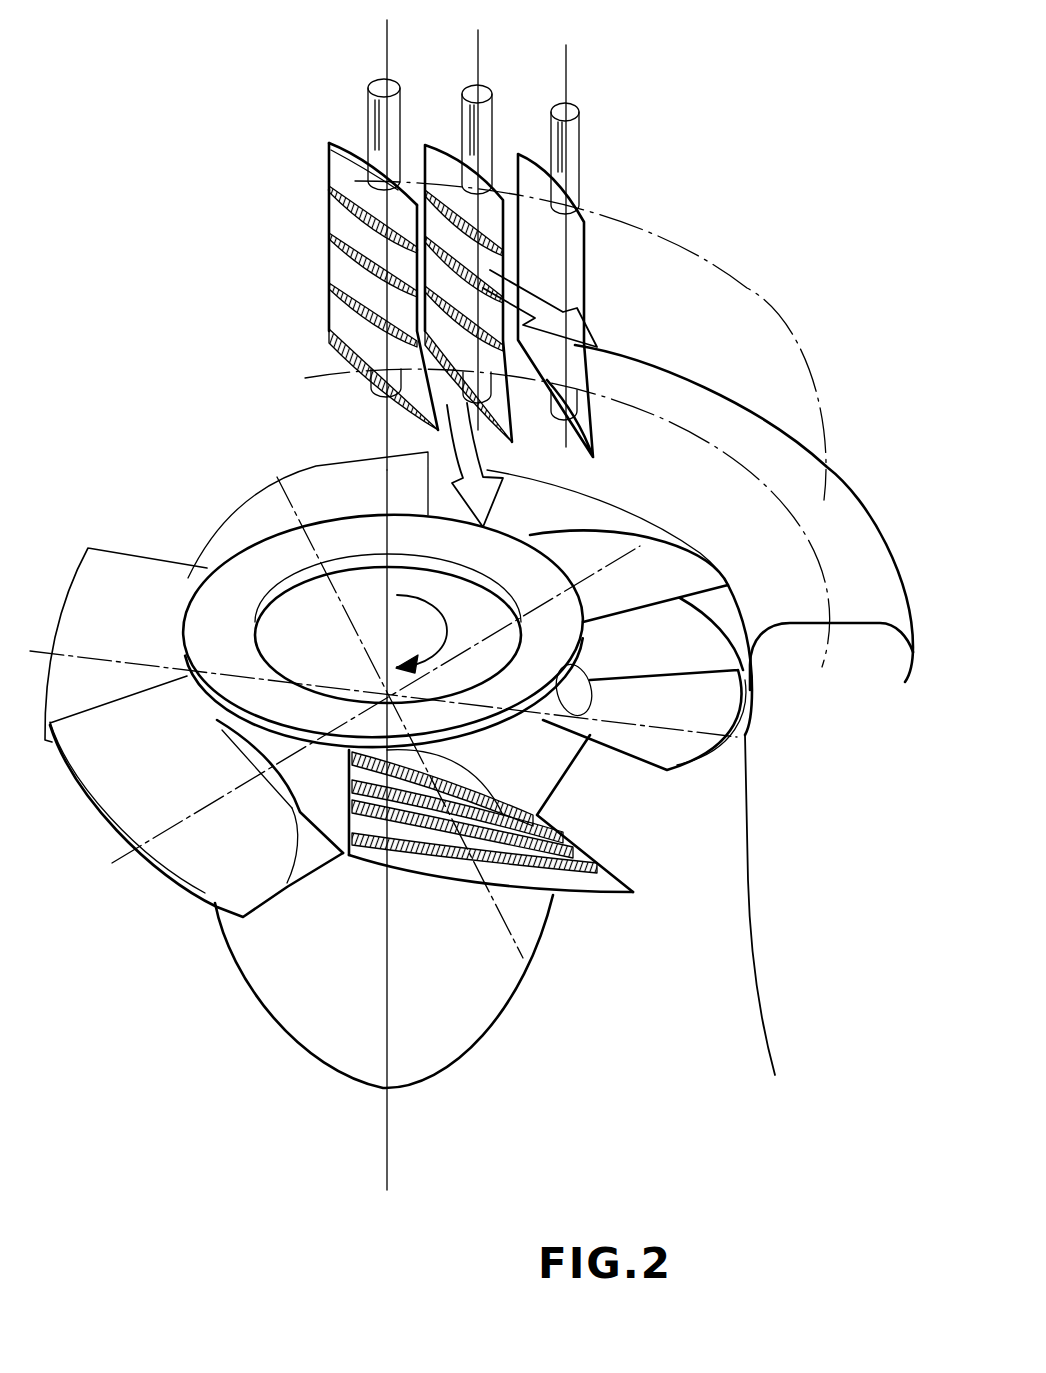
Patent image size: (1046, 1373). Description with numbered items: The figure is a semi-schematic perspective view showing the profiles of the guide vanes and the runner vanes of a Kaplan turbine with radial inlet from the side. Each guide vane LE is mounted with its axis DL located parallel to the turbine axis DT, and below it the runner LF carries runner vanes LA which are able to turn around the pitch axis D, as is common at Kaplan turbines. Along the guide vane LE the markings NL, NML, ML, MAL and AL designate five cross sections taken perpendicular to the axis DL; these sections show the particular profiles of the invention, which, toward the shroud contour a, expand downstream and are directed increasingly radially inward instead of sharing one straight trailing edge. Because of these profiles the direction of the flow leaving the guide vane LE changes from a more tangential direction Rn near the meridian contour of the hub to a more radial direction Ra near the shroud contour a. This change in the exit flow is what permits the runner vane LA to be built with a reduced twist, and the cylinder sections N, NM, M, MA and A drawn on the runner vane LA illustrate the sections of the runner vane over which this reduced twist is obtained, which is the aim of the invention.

The guide vane axis DL is at (597, 43).
The turbine axis DT is at (388, 1153).
The guide vane LE is at (327, 163).
The guide vane cross section NL is at (340, 172).
The guide vane cross section NML is at (330, 200).
The guide vane cross section ML is at (330, 249).
The guide vane cross section MAL is at (330, 286).
The guide vane cross section AL is at (329, 331).
The tangential flow direction Rn is at (585, 322).
The radial flow direction Ra is at (488, 494).
The shroud contour a is at (759, 962).
The runner vane LA is at (593, 880).
The pitch axis D is at (512, 915).
The runner LF is at (462, 1032).
The runner vane cylinder section N is at (290, 883).
The runner vane cylinder section NM is at (430, 835).
The runner vane cylinder section M is at (520, 858).
The runner vane cylinder section MA is at (545, 878).
The runner vane cylinder section A is at (565, 900).